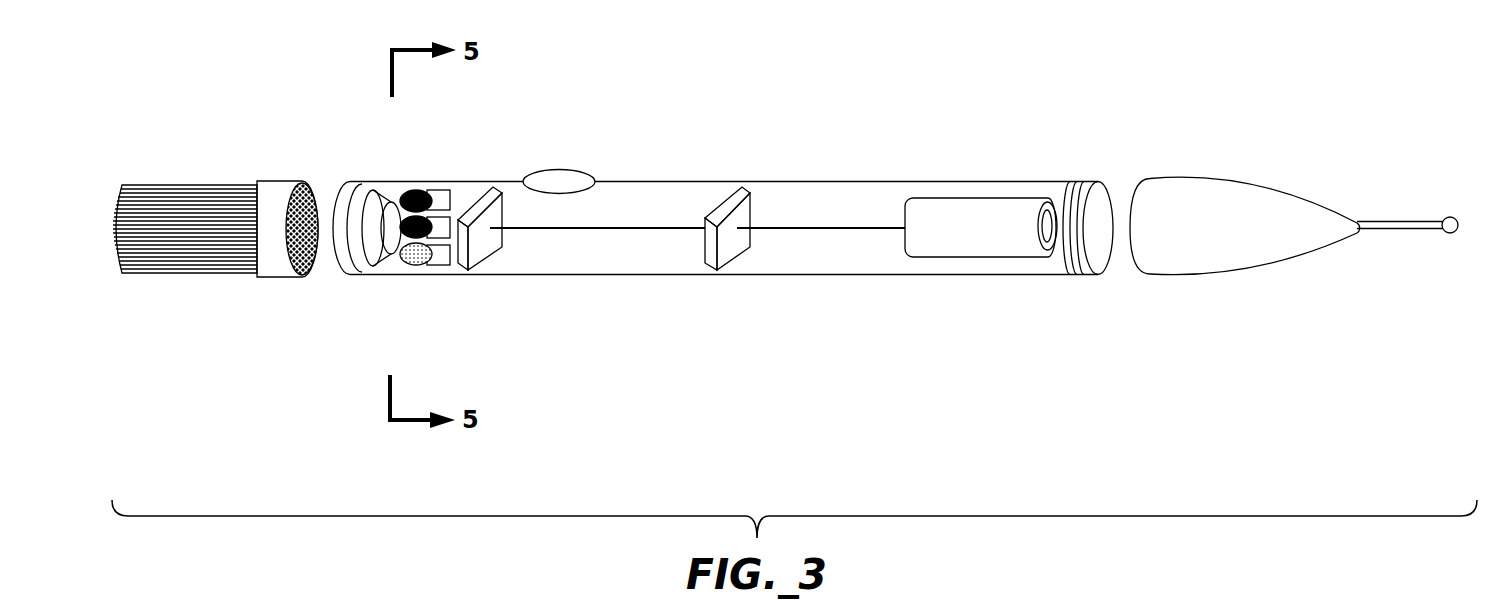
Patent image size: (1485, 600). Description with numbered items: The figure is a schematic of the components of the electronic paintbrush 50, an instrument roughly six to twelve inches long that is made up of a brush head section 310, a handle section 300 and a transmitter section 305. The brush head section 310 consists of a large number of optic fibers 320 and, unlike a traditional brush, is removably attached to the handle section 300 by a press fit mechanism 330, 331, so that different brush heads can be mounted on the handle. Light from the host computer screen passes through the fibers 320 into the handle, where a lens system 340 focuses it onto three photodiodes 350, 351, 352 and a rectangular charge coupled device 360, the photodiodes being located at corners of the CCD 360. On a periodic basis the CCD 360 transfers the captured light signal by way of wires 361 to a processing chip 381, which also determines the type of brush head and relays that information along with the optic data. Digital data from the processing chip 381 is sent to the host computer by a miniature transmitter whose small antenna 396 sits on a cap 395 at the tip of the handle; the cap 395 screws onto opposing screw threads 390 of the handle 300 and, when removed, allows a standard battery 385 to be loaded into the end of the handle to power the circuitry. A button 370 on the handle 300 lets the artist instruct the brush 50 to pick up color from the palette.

The electronic paintbrush 50 is at (789, 280).
The handle section 300 is at (750, 277).
The transmitter section 305 is at (1297, 234).
The brush head section 310 is at (215, 231).
The optic fibers 320 is at (207, 273).
The press fit mechanism 330 is at (280, 292).
The press fit mechanism 331 is at (343, 292).
The lens system 340 is at (386, 198).
The photodiode 350 is at (445, 193).
The photodiode 351 is at (438, 230).
The photodiode 352 is at (442, 253).
The charge coupled device 360 is at (484, 240).
The wires 361 is at (675, 230).
The button 370 is at (572, 172).
The processing chip 381 is at (750, 188).
The battery 385 is at (970, 212).
The screw threads 390 is at (1087, 278).
The cap 395 is at (1220, 180).
The antenna 396 is at (1388, 220).